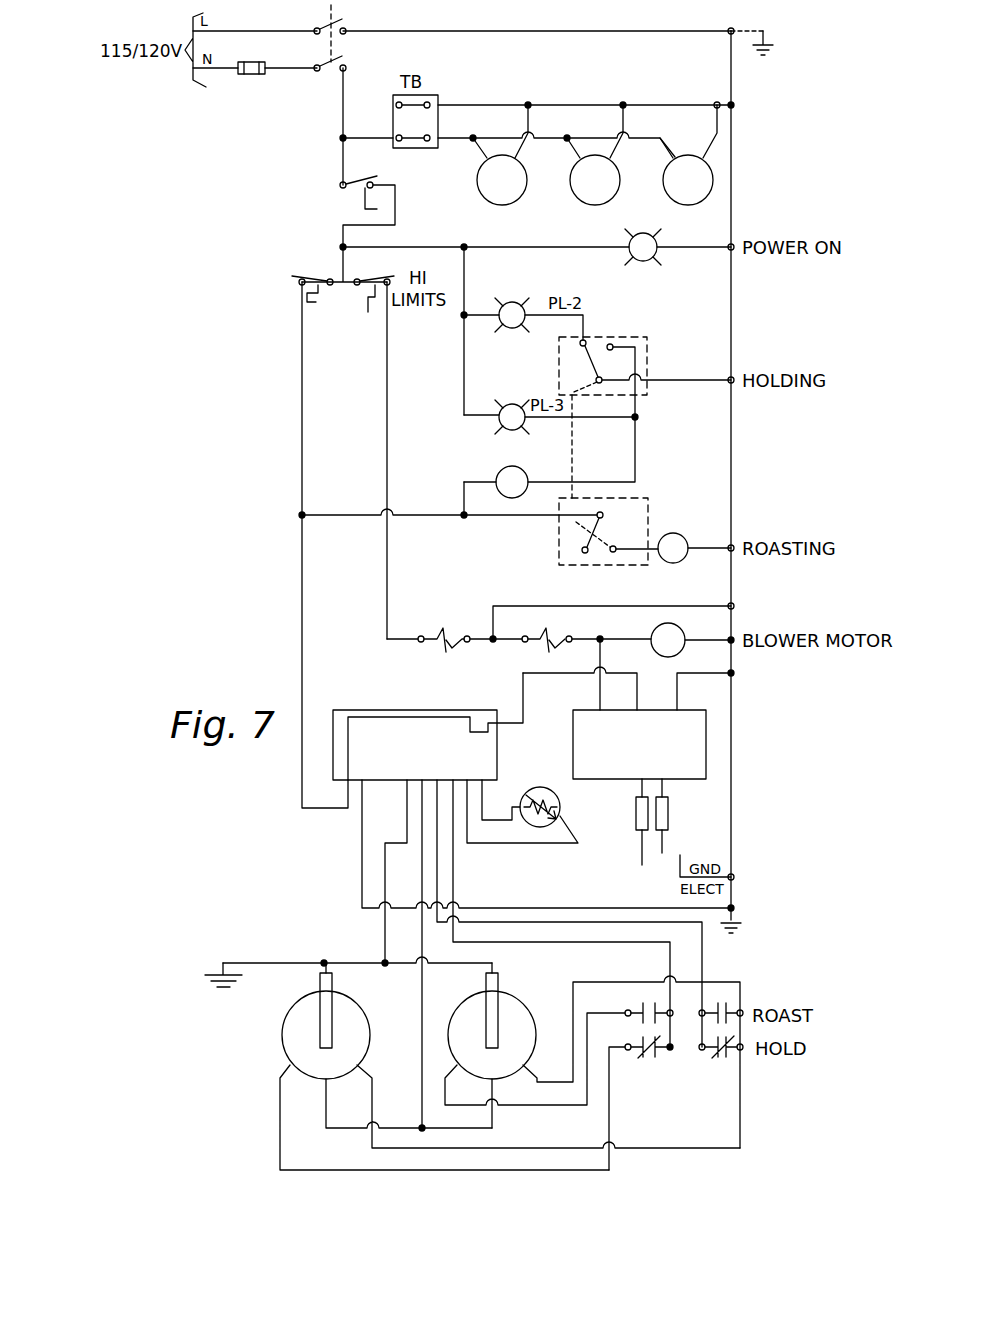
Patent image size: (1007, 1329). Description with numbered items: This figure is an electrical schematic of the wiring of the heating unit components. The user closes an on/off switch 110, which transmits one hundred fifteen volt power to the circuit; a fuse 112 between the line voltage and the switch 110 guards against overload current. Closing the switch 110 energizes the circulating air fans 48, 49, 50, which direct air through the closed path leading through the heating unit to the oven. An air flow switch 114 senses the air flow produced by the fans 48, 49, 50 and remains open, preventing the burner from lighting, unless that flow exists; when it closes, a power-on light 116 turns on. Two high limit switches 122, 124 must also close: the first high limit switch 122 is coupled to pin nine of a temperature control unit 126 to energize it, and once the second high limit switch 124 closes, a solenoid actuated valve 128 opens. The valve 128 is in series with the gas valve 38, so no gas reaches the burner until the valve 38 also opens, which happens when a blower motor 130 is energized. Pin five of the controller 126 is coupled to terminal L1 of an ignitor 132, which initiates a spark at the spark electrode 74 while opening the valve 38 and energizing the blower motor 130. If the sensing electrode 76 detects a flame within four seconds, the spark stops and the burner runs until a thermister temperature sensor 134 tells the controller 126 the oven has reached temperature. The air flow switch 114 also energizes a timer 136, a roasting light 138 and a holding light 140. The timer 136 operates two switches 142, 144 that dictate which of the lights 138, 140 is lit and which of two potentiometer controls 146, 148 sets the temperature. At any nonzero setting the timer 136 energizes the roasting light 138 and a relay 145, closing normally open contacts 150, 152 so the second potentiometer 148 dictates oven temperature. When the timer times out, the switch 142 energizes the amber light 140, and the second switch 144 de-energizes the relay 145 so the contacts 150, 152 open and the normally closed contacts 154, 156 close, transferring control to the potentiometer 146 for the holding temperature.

The on/off switch 110 is at (351, 24).
The fuse 112 is at (251, 74).
The air flow switch 114 is at (356, 198).
The power-on light 116 is at (645, 262).
The first high limit switch 122 is at (306, 298).
The second high limit switch 124 is at (373, 305).
The temperature control unit 126 is at (418, 710).
The solenoid actuated valve 128 is at (438, 632).
The valve 38 is at (546, 626).
The blower motor 130 is at (683, 651).
The ignitor 132 is at (707, 740).
The thermister temperature sensor 134 is at (533, 828).
The timer 136 is at (519, 474).
The roasting light 138 is at (498, 423).
The holding light 140 is at (515, 298).
The switch 142 is at (646, 397).
The second switch 144 is at (645, 500).
The relay 145 is at (680, 562).
The potentiometer control 146 is at (360, 1034).
The second potentiometer control 148 is at (528, 1050).
The normally open contact 150 is at (658, 1000).
The normally open contact 152 is at (704, 980).
The normally closed contact 154 is at (656, 1084).
The normally closed contact 156 is at (724, 1084).
The circulating air fan 48 is at (497, 203).
The circulating air fan 49 is at (590, 203).
The circulating air fan 50 is at (704, 205).
The ignitor electrode 74 is at (665, 844).
The flame electrode 76 is at (640, 857).